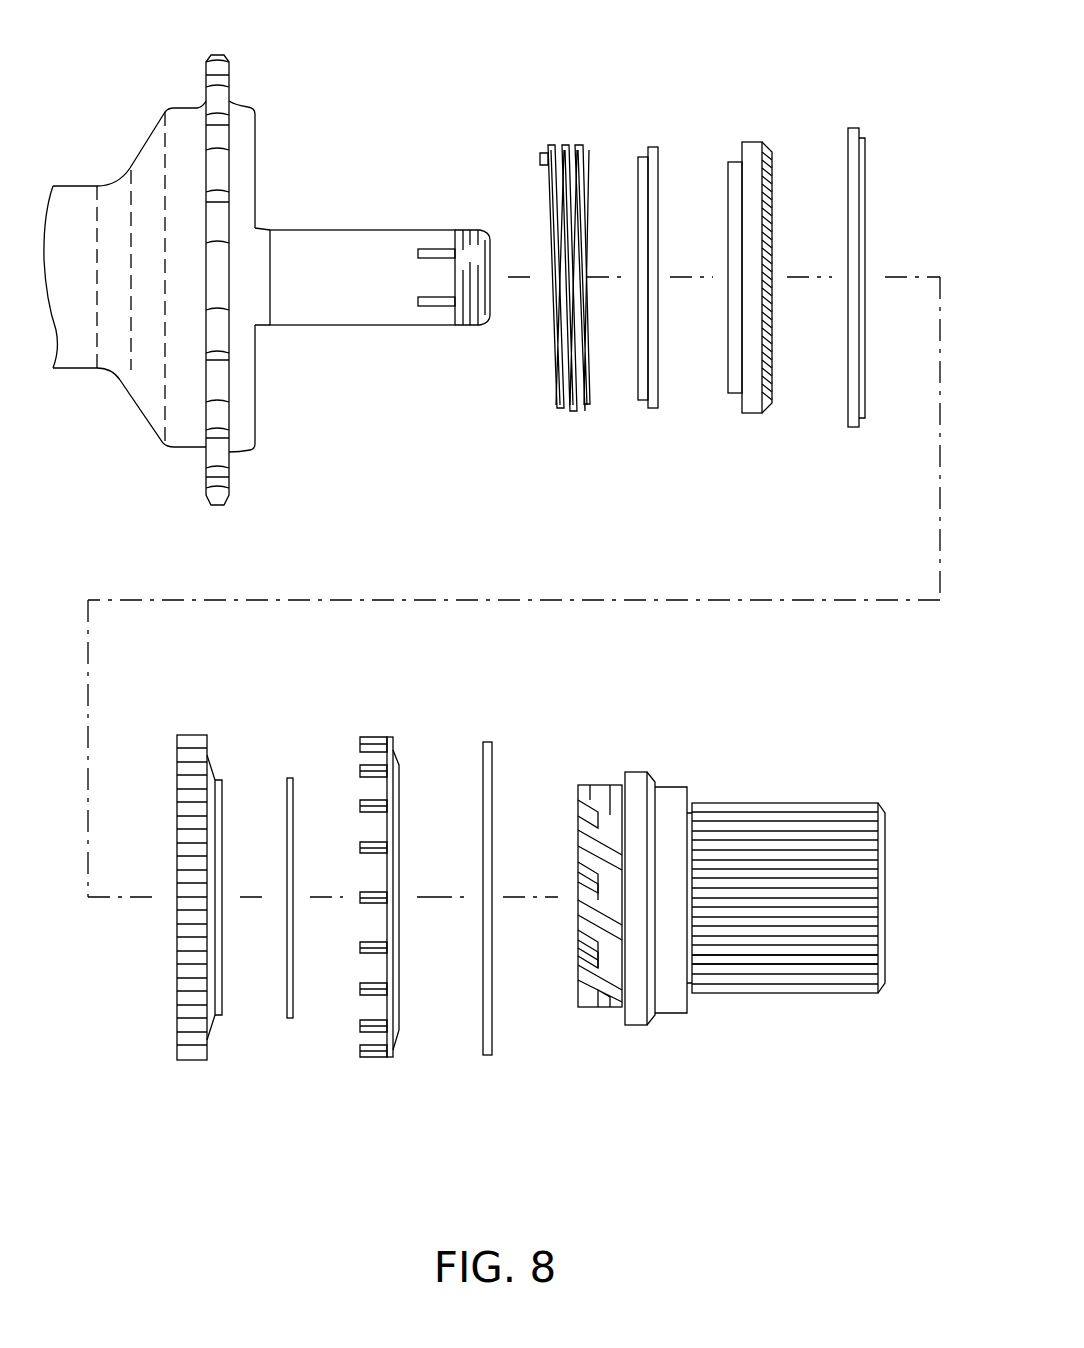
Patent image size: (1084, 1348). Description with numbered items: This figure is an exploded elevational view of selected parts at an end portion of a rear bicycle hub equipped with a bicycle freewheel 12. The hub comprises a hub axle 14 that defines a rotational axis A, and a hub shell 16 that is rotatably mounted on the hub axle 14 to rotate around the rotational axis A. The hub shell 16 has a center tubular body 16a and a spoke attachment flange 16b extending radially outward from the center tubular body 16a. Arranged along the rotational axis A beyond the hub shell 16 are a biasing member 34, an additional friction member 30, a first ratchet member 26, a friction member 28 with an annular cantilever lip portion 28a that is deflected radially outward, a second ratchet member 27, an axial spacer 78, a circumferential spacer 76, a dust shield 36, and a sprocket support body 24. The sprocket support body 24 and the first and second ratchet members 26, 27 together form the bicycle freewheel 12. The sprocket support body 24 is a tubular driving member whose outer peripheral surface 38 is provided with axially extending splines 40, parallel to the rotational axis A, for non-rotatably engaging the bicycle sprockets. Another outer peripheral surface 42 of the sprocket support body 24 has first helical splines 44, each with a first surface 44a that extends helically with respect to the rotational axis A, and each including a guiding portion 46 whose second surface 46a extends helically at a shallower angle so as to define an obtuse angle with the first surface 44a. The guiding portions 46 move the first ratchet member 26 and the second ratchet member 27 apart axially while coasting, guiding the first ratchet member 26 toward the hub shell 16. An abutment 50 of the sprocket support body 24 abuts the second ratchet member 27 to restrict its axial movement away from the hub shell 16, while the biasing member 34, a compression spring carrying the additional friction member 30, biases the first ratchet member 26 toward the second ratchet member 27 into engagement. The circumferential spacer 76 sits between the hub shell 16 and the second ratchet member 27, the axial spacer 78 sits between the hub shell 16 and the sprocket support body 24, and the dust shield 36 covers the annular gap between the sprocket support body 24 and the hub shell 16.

The bicycle freewheel 12 is at (812, 683).
The hub axle 14 is at (358, 218).
The hub shell 16 is at (111, 381).
The center tubular body 16a is at (75, 186).
The spoke attachment flange 16b is at (215, 55).
The sprocket support body 24 is at (742, 776).
The first ratchet member 26 is at (745, 120).
The second ratchet member 27 is at (178, 1090).
The friction member 28 is at (858, 110).
The cantilever lip portion 28a is at (866, 172).
The additional friction member 30 is at (661, 118).
The biasing member 34 is at (555, 120).
The dust shield 36 is at (485, 1082).
The outer peripheral surface 38 is at (862, 907).
The splines 40 is at (836, 957).
The outer peripheral surface 42 is at (590, 903).
The first helical spline 44 is at (580, 942).
The first surface 44a is at (590, 880).
The guiding portion 46 is at (615, 885).
The second surface 46a is at (612, 925).
The abutment 50 is at (637, 772).
The circumferential spacer 76 is at (390, 1085).
The axial spacer 78 is at (285, 1042).
The rotational axis A is at (910, 277).